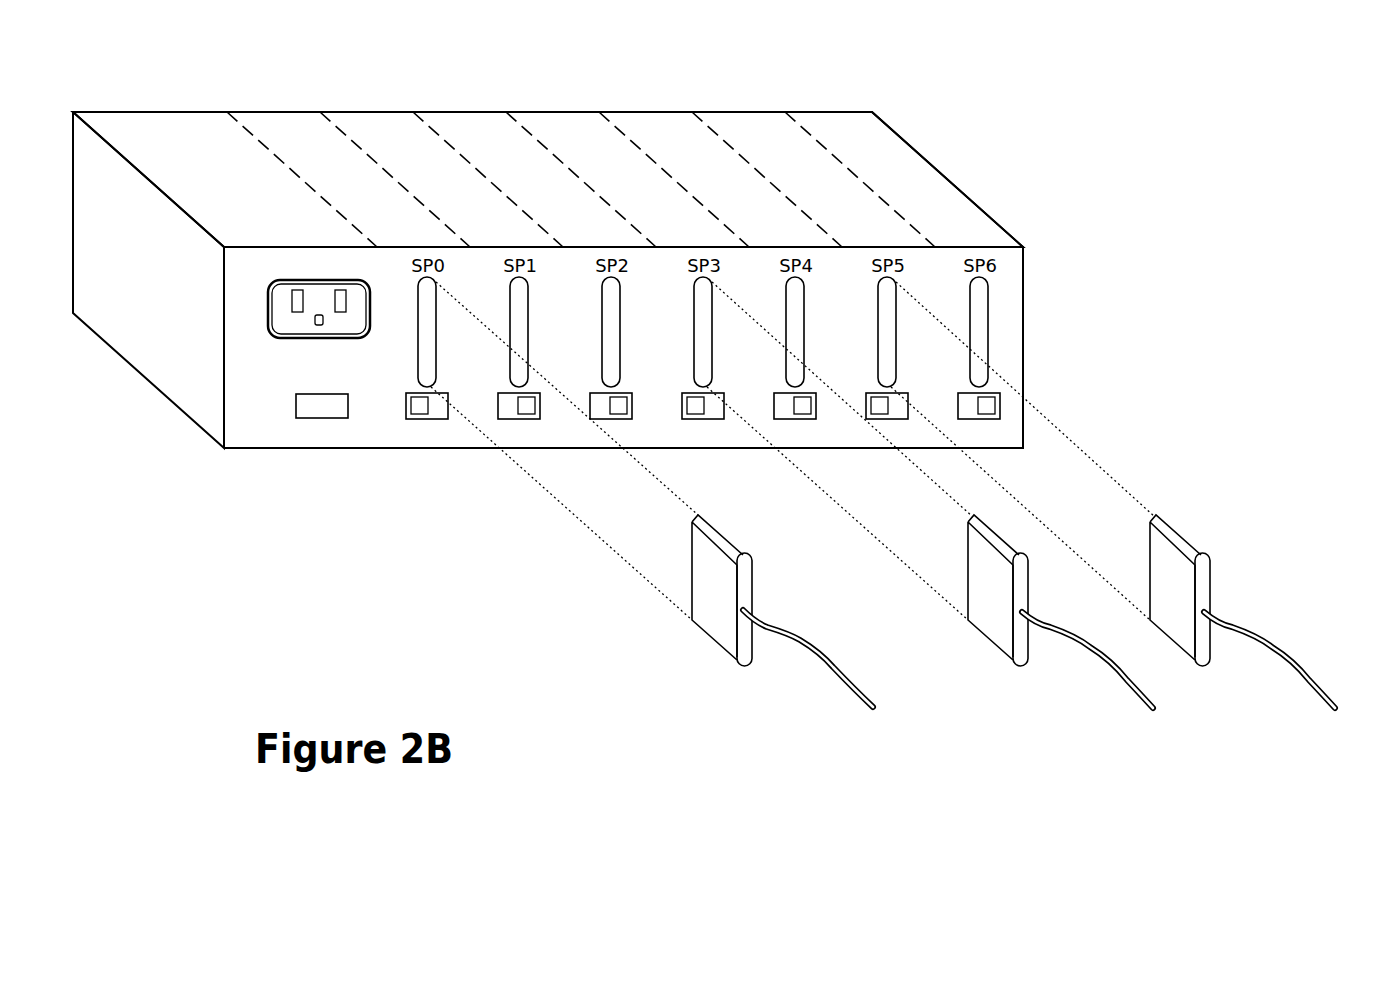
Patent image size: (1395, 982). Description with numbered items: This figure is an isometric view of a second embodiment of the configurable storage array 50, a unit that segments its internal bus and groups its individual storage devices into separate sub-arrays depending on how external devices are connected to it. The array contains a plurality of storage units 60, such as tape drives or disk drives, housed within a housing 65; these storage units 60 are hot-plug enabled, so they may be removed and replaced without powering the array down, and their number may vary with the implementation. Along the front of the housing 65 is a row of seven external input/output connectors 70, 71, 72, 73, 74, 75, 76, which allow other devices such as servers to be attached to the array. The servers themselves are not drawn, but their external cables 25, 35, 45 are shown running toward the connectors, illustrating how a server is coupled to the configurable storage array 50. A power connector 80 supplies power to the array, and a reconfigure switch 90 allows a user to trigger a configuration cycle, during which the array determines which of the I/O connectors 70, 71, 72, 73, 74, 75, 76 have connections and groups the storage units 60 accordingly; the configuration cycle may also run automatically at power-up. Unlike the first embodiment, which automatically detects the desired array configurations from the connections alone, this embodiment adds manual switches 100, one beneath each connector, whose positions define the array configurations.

The configurable storage array 50 is at (126, 62).
The storage units 60 is at (283, 112).
The housing 65 is at (965, 193).
The external input/output (I/O) connector 70 is at (426, 337).
The external input/output (I/O) connector 71 is at (518, 337).
The external input/output (I/O) connector 72 is at (610, 337).
The external input/output (I/O) connector 73 is at (702, 337).
The external input/output (I/O) connector 74 is at (794, 337).
The external input/output (I/O) connector 75 is at (886, 337).
The external input/output (I/O) connector 76 is at (979, 338).
The power connector 80 is at (320, 331).
The reconfigure switch 90 is at (323, 419).
The manual switches 100 is at (428, 419).
The external cable 25 is at (725, 545).
The external cable 35 is at (1002, 550).
The external cable 45 is at (1187, 550).